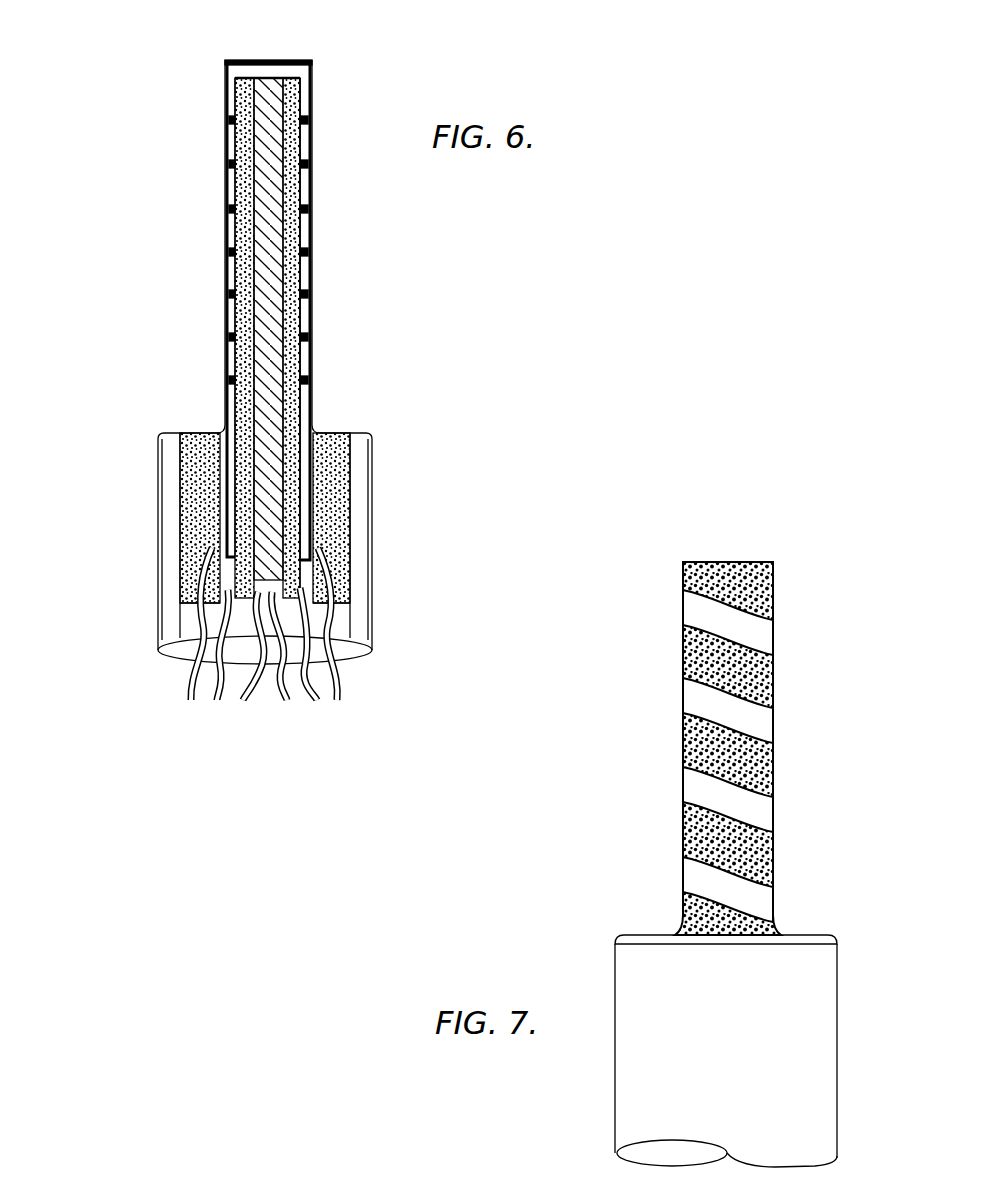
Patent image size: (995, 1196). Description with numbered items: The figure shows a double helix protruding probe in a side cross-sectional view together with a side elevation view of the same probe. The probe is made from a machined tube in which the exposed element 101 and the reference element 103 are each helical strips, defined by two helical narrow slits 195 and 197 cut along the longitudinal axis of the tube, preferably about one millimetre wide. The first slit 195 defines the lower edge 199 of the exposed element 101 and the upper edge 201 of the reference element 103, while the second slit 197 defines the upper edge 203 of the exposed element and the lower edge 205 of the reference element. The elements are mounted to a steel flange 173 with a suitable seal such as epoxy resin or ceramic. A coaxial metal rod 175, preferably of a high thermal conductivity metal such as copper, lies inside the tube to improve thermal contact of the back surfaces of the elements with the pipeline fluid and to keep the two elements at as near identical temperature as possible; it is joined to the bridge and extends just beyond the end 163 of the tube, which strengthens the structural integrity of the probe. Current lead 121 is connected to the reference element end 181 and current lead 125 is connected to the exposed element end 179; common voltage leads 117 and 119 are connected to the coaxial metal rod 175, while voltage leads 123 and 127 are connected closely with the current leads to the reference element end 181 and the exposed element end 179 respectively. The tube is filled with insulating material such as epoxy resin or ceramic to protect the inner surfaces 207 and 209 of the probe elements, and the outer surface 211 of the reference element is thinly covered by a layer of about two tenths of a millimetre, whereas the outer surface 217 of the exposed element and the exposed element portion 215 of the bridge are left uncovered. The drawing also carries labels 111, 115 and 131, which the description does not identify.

In FIG. 6, the exposed element 101 is at (304, 145).
In FIG. 7, the exposed element 101 is at (755, 722).
In FIG. 6, the reference element 103 is at (228, 137).
In FIG. 7, the reference element 103 is at (683, 652).
In FIG. 6, the housing 111 is at (345, 433).
In FIG. 6, the housing wall 115 is at (165, 522).
In FIG. 6, the common voltage lead 117 is at (285, 705).
In FIG. 6, the common voltage lead 119 is at (243, 705).
In FIG. 6, the current lead 121 is at (217, 702).
In FIG. 6, the voltage lead 123 is at (193, 703).
In FIG. 6, the current lead 125 is at (290, 705).
In FIG. 6, the voltage lead 127 is at (337, 703).
In FIG. 6, the tip cap 131 is at (270, 61).
In FIG. 6, the end of the tube 163 is at (220, 556).
In FIG. 7, the steel flange 173 is at (815, 1030).
In FIG. 6, the coaxial metal rod 175 is at (308, 230).
In FIG. 6, the exposed element end 179 is at (305, 536).
In FIG. 6, the reference element end 181 is at (222, 536).
In FIG. 6, the first helical narrow slit 195 is at (222, 337).
In FIG. 6, the second helical narrow slit 197 is at (222, 380).
In FIG. 6, the lower edge of the exposed element 199 is at (308, 328).
In FIG. 6, the upper edge of the reference element 201 is at (308, 268).
In FIG. 6, the upper edge of the exposed element 203 is at (308, 306).
In FIG. 6, the lower edge of the reference element 205 is at (308, 365).
In FIG. 6, the inner surface of probe element 207 is at (232, 172).
In FIG. 6, the inner surface of probe element 209 is at (228, 212).
In FIG. 6, the outer surface of the reference element 211 is at (309, 192).
In FIG. 6, the exposed element portion of the bridge 215 is at (225, 97).
In FIG. 6, the outer surface of the exposed element 217 is at (225, 270).